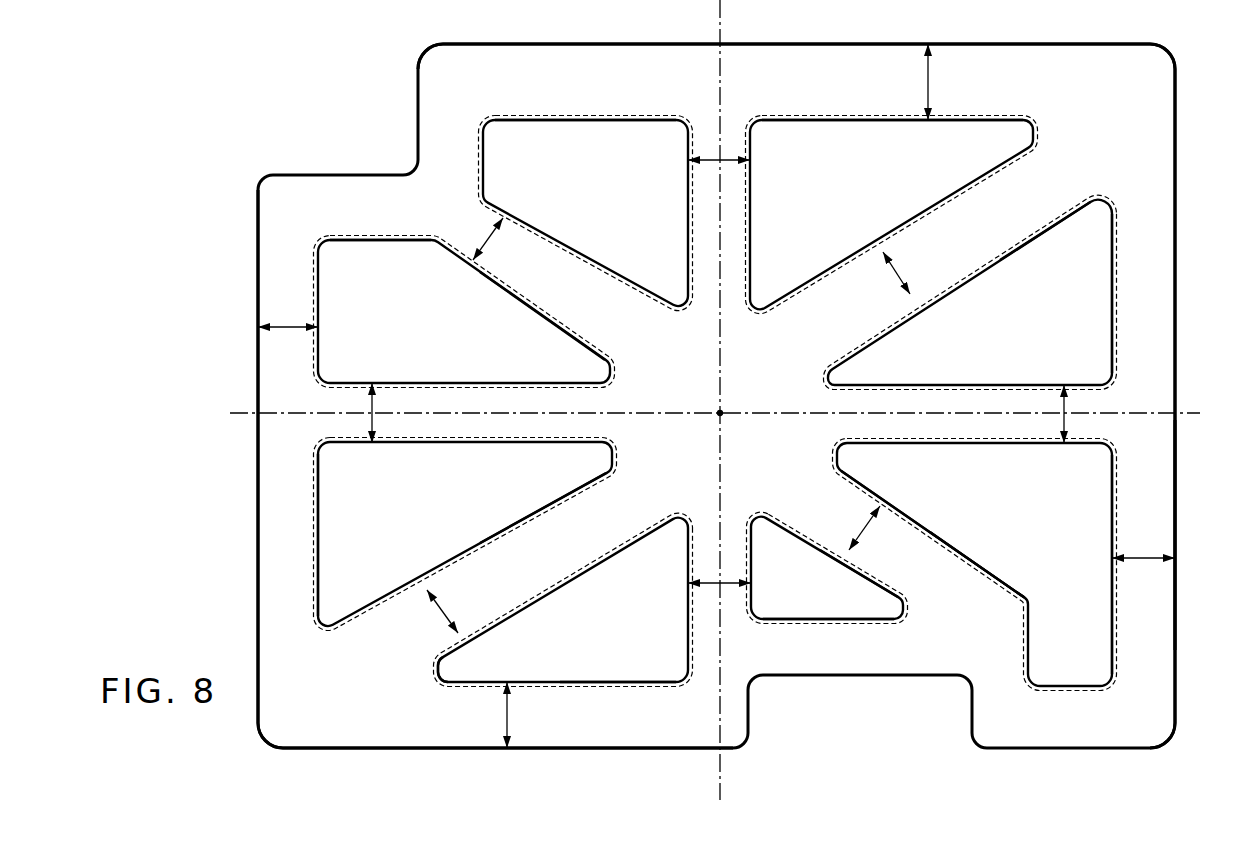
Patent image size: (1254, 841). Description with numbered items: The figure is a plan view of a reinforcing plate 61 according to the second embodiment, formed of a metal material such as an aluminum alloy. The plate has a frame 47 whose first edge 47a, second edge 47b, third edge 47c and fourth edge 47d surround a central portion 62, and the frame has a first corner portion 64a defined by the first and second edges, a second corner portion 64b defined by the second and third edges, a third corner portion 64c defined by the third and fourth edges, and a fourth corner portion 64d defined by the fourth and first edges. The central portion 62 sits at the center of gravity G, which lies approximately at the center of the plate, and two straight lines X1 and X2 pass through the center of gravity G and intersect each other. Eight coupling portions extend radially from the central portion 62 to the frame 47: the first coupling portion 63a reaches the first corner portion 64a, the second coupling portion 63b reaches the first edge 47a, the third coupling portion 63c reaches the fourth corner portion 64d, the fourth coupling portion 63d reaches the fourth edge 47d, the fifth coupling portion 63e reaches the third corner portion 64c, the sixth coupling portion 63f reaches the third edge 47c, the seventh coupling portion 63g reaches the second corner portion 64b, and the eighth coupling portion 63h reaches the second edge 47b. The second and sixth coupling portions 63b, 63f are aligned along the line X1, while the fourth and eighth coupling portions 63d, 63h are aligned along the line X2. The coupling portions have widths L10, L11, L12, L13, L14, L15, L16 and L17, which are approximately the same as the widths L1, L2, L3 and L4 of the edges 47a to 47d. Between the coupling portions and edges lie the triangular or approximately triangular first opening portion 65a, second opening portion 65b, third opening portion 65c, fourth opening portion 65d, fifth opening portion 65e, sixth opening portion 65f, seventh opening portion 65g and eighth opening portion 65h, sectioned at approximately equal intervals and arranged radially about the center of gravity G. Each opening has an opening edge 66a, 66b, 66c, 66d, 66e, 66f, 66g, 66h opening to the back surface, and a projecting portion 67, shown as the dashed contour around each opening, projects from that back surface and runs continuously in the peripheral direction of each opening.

The reinforcing plate 61 is at (1178, 232).
The central portion 62 is at (692, 450).
The first coupling portion 63a is at (955, 257).
The second coupling portion 63b is at (745, 206).
The third coupling portion 63c is at (537, 247).
The fourth coupling portion 63d is at (433, 393).
The fifth coupling portion 63e is at (488, 563).
The sixth coupling portion 63f is at (697, 618).
The seventh coupling portion 63g is at (905, 539).
The eighth coupling portion 63h is at (987, 430).
The first corner portion 64a is at (1148, 68).
The second corner portion 64b is at (1129, 739).
The third corner portion 64c is at (290, 732).
The fourth corner portion 64d is at (428, 78).
The first opening portion 65a is at (983, 133).
The second opening portion 65b is at (593, 130).
The third opening portion 65c is at (377, 268).
The fourth opening portion 65d is at (328, 550).
The fifth opening portion 65e is at (477, 657).
The sixth opening portion 65f is at (821, 602).
The seventh opening portion 65g is at (1033, 568).
The eighth opening portion 65h is at (1070, 227).
The opening edge 66a is at (814, 118).
The opening edge 66b is at (533, 119).
The opening edge 66c is at (532, 316).
The opening edge 66d is at (530, 514).
The opening edge 66e is at (602, 684).
The opening edge 66f is at (878, 576).
The opening edge 66g is at (1113, 596).
The opening edge 66h is at (1113, 262).
The projecting portion 67 is at (641, 115).
The frame 47 is at (1180, 518).
The first edge 47a is at (847, 56).
The second edge 47b is at (1157, 355).
The third edge 47c is at (592, 733).
The fourth edge 47d is at (267, 492).
The center of gravity G is at (722, 411).
The straight line X1 is at (718, 6).
The straight line X2 is at (1187, 415).
The width of first edge L1 is at (942, 82).
The width of second edge L2 is at (1143, 546).
The width of third edge L3 is at (522, 715).
The width of fourth edge L4 is at (288, 311).
The width of first coupling portion L10 is at (909, 273).
The width of second coupling portion L11 is at (738, 152).
The width of third coupling portion L12 is at (480, 239).
The width of fourth coupling portion L13 is at (370, 403).
The width of fifth coupling portion L14 is at (454, 611).
The width of sixth coupling portion L15 is at (727, 583).
The width of seventh coupling portion L16 is at (856, 528).
The width of eighth coupling portion L17 is at (1068, 426).